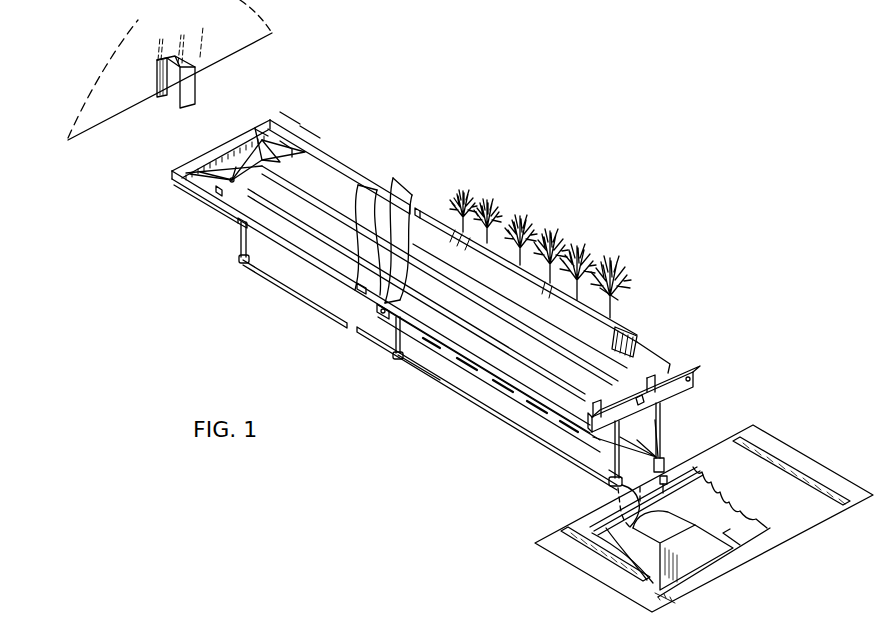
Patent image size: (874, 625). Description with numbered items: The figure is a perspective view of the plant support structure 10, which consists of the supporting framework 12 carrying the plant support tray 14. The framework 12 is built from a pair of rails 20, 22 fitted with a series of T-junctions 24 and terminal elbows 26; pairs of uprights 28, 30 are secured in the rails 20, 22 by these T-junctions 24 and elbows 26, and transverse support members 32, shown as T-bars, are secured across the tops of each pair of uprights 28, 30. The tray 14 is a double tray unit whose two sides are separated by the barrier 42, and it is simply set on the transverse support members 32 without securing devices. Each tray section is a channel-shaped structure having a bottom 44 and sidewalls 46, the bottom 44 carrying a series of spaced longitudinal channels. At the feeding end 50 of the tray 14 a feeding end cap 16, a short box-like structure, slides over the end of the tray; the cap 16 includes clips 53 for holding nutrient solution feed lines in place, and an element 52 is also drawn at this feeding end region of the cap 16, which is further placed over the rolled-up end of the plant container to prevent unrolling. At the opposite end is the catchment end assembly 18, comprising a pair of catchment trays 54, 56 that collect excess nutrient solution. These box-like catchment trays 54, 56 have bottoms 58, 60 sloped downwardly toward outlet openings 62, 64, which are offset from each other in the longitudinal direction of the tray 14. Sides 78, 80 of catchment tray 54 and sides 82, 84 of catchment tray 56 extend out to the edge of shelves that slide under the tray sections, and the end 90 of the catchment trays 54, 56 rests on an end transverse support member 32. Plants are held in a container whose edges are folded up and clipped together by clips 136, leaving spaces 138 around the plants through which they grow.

The plant support structure 10 is at (642, 278).
The supporting framework 12 is at (485, 428).
The plant support tray 14 is at (642, 342).
The feeding end cap 16 is at (690, 375).
The catchment end assembly 18 is at (290, 113).
The rail 20 is at (540, 444).
The rail 22 is at (662, 430).
The T-junction 24 is at (404, 360).
The terminal elbow 26 is at (244, 263).
The upright 28 is at (253, 270).
The upright 30 is at (665, 438).
The transverse support member 32 is at (241, 242).
The barrier 42 is at (377, 190).
The bottom 44 is at (440, 314).
The sidewall 46 is at (354, 218).
The feeding end 50 is at (690, 355).
The end post 52 is at (658, 372).
The clip 53 is at (668, 396).
The catchment tray 54 is at (172, 166).
The catchment tray 56 is at (250, 122).
The bottom 58 is at (210, 160).
The bottom 60 is at (285, 145).
The outlet opening 62 is at (216, 192).
The outlet opening 64 is at (260, 133).
The side 78 is at (182, 185).
The side 80 is at (226, 178).
The side 82 is at (255, 137).
The side 84 is at (318, 146).
The end 90 is at (325, 140).
The clip 136 is at (533, 284).
The space 138 is at (592, 305).